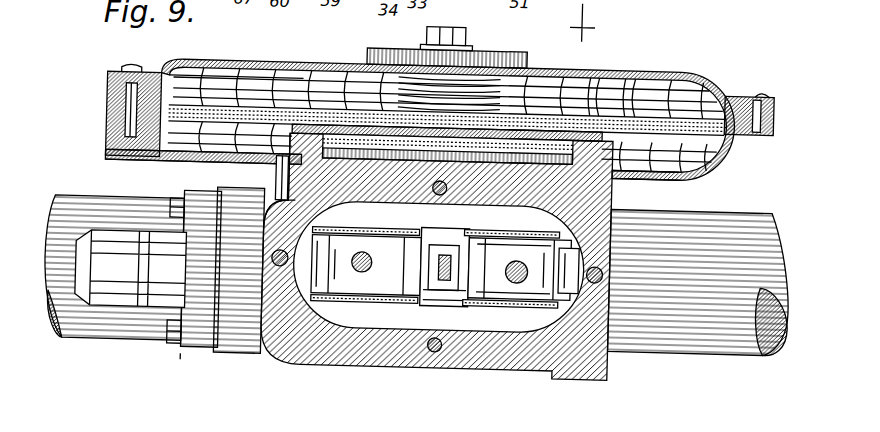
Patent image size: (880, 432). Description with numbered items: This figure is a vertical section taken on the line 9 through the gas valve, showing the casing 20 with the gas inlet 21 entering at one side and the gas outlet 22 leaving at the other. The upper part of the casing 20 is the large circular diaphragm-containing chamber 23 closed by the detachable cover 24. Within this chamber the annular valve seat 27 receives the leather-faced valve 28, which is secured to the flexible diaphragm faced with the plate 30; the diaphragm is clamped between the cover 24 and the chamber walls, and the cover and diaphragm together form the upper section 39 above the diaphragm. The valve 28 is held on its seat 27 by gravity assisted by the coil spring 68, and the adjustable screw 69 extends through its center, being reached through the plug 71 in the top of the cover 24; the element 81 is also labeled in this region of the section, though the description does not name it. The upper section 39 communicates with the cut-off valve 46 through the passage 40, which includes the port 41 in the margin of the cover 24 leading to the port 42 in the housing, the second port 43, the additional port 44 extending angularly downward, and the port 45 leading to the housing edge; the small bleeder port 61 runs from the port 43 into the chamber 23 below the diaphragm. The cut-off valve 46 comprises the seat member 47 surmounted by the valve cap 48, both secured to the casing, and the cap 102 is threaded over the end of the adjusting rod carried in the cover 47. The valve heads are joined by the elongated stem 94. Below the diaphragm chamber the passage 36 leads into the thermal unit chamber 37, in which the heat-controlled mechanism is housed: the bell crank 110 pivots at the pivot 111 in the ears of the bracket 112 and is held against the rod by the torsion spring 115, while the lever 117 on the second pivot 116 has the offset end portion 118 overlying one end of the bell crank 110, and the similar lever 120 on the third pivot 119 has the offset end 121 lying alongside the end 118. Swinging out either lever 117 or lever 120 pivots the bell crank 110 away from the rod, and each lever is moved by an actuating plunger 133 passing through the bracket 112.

The section line 9 is at (566, 25).
The casing 20 is at (696, 172).
The gas inlet 21 is at (114, 348).
The gas outlet 22 is at (737, 344).
The diaphragm-containing chamber 23 is at (656, 174).
The detachable cover 24 is at (700, 70).
The annular valve seat 27 is at (587, 110).
The leather-faced valve 28 is at (545, 114).
The plate 30 is at (358, 72).
The passage 36 is at (305, 320).
The thermal unit chamber 37 is at (370, 326).
The upper section 39 is at (622, 72).
The passage 40 is at (110, 168).
The port 41 is at (118, 76).
The port 42 is at (106, 126).
The second port 43 is at (148, 169).
The additional port 44 is at (274, 180).
The port 45 is at (266, 228).
The cut-off valve 46 is at (187, 374).
The seat member 47 is at (242, 358).
The valve cap 48 is at (206, 354).
The bleeder port 61 is at (171, 169).
The coil spring 68 is at (478, 75).
The adjustable screw 69 is at (484, 126).
The plug 71 is at (421, 36).
The spring 81 is at (402, 122).
The elongated stem 94 is at (292, 282).
The cap 102 is at (116, 308).
The bell crank 110 is at (452, 300).
The pivot 111 is at (500, 260).
The bracket 112 is at (340, 232).
The torsion spring 115 is at (604, 200).
The second pivot 116 is at (580, 256).
The lever 117 is at (576, 280).
The offset end portion 118 is at (426, 282).
The third pivot 119 is at (334, 270).
The lever 120 is at (390, 250).
The offset end 121 is at (436, 244).
The actuating plunger 133 is at (372, 276).